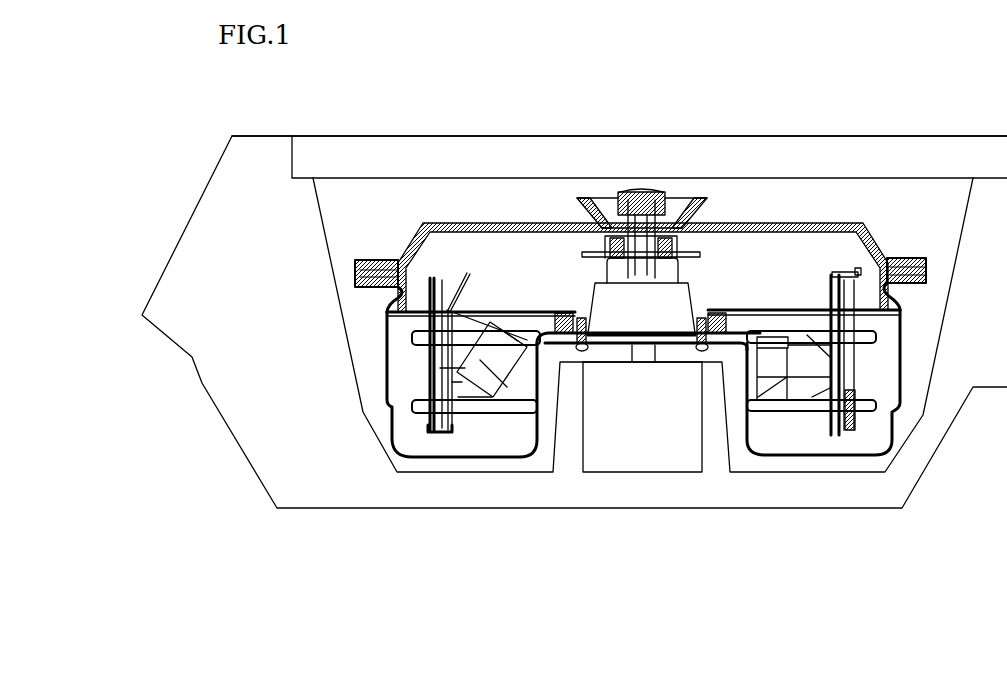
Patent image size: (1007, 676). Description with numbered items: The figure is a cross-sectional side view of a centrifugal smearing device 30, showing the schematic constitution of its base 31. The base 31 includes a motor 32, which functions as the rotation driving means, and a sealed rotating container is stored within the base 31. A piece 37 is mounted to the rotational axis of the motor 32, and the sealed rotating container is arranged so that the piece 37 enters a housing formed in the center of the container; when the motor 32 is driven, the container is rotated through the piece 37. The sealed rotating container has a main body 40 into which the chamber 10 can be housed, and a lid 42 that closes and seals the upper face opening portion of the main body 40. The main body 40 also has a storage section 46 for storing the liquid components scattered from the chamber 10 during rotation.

The chamber 10 is at (447, 312).
The centrifugal smearing device 30 is at (816, 125).
The base 31 is at (202, 383).
The motor 32 is at (641, 460).
The piece 37 is at (676, 302).
The main body 40 is at (895, 392).
The lid 42 is at (748, 223).
The storage section 46 is at (393, 340).